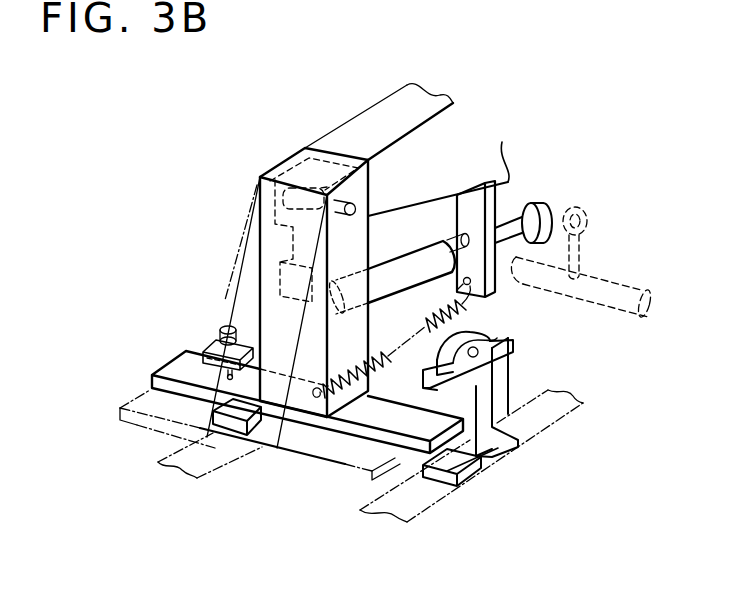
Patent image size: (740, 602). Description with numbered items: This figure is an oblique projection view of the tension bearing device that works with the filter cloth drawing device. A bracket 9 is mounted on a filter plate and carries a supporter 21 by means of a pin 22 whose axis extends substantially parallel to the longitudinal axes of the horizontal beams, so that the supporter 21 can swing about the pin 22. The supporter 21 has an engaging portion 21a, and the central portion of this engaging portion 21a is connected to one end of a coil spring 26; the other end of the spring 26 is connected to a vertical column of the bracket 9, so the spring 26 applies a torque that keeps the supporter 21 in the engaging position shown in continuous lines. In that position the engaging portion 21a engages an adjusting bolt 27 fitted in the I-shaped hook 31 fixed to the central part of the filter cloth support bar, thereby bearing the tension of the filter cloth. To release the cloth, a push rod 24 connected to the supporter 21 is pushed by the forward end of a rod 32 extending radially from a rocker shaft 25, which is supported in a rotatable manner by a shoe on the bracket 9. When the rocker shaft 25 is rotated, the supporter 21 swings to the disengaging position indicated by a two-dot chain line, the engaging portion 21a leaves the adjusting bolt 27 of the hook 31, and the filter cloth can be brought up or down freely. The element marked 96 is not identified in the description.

The bracket 9 is at (476, 142).
The supporter 21 is at (267, 244).
The engaging portion 21a is at (313, 452).
The pin 22 is at (368, 184).
The push rod 24 is at (387, 268).
The rocker shaft 25 is at (620, 274).
The coil spring 26 is at (460, 308).
The adjusting bolt 27 is at (353, 412).
The I-shaped hook 31 is at (512, 348).
The rod 32 is at (585, 253).
The bracket 96 is at (493, 194).